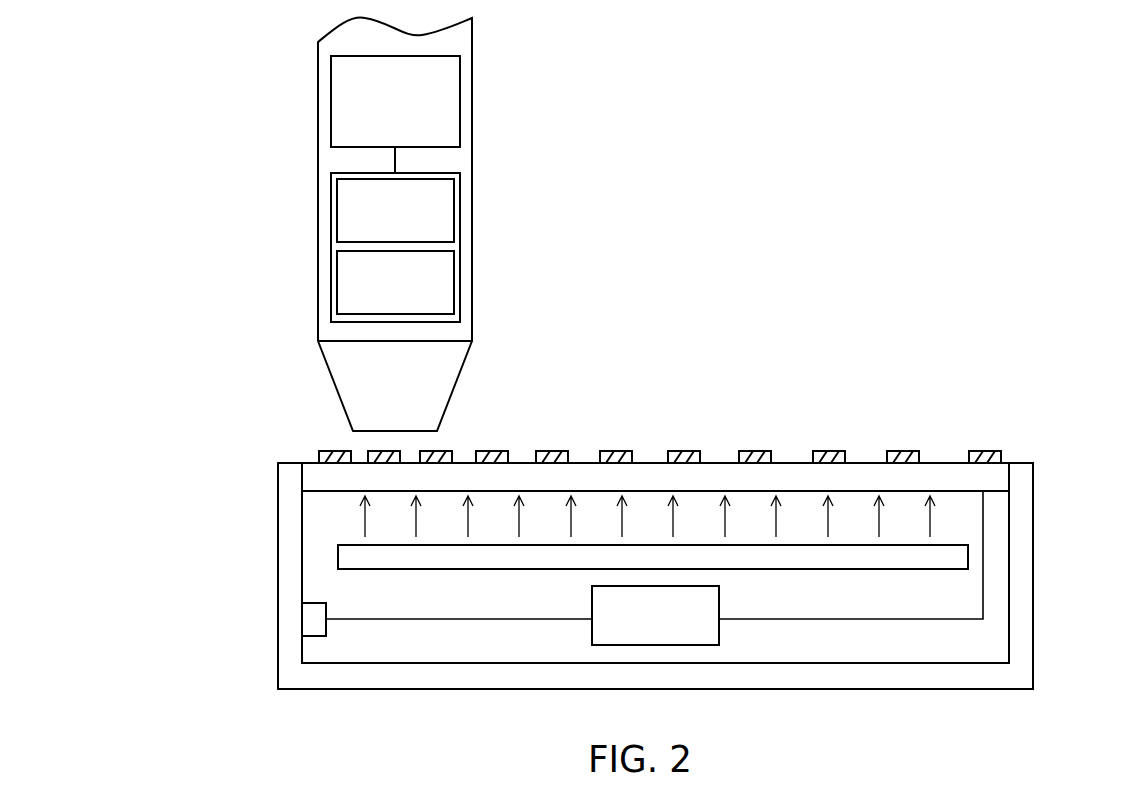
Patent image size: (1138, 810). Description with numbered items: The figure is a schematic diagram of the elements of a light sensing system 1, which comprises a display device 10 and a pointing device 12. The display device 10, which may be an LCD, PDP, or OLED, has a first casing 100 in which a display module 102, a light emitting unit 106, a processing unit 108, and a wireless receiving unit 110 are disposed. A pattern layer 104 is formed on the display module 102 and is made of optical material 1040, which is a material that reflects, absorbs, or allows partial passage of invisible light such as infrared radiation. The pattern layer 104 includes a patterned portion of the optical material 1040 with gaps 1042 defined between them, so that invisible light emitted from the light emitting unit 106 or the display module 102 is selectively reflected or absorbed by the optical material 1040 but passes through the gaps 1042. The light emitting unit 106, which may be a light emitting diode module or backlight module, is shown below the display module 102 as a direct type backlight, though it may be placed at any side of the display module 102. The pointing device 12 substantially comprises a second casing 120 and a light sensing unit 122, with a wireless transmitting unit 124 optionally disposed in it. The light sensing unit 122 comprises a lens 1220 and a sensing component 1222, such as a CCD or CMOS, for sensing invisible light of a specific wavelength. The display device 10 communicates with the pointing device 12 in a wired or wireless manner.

The light sensing system 1 is at (860, 177).
The display device 10 is at (1047, 498).
The pointing device 12 is at (500, 103).
The first casing 100 is at (290, 462).
The display module 102 is at (941, 477).
The pattern layer 104 is at (793, 385).
The optical material 1040 is at (758, 455).
The gaps 1042 is at (722, 462).
The light emitting unit 106 is at (345, 555).
The processing unit 108 is at (592, 632).
The wireless receiving unit 110 is at (315, 620).
The second casing 120 is at (472, 153).
The light sensing unit 122 is at (331, 177).
The lens 1220 is at (337, 282).
The sensing component 1222 is at (337, 218).
The wireless transmitting unit 124 is at (331, 102).